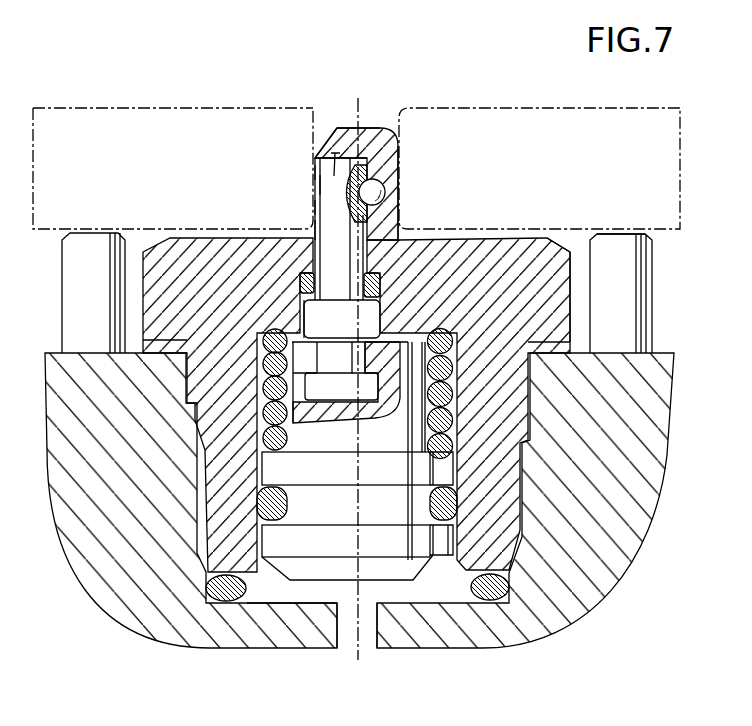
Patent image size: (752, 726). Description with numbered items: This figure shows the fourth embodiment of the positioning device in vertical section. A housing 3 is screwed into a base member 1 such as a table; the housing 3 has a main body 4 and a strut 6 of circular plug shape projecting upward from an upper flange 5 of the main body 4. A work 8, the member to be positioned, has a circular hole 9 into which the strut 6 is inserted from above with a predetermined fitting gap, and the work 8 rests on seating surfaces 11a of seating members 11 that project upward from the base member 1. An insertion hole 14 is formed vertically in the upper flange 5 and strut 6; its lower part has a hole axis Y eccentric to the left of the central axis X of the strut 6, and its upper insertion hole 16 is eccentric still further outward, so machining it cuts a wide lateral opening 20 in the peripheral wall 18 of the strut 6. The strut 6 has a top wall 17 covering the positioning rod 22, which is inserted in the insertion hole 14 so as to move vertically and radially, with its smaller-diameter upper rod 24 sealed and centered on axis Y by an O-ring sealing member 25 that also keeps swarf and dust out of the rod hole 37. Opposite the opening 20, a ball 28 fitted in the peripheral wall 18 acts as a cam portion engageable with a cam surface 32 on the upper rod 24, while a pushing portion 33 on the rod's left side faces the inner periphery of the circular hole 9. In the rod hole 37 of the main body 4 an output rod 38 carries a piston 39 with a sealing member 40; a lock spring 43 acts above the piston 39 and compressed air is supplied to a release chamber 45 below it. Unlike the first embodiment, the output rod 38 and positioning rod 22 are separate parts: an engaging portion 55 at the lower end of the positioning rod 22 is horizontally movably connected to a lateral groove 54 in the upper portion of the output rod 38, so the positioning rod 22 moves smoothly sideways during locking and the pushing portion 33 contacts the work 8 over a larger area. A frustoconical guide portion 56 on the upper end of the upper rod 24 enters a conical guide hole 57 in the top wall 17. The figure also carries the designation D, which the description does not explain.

The base member 1 is at (636, 553).
The housing 3 is at (571, 303).
The main body 4 is at (466, 567).
The upper flange 5 is at (566, 272).
The strut 6 is at (400, 175).
The work 8 is at (135, 110).
The circular hole 9 is at (320, 110).
The seating members 11 is at (653, 287).
The seating surfaces 11a is at (613, 230).
The insertion hole 14 is at (380, 303).
The upper insertion hole 16 is at (315, 227).
The top wall 17 is at (325, 140).
The peripheral wall 18 is at (399, 200).
The opening 20 is at (317, 158).
The positioning rod 22 is at (316, 182).
The upper rod 24 is at (320, 208).
The sealing member 25 is at (313, 282).
The ball 28 is at (388, 190).
The cam surface 32 is at (378, 175).
The pushing portion 33 is at (313, 172).
The rod hole 37 is at (258, 466).
The output rod 38 is at (320, 584).
The piston 39 is at (378, 478).
The sealing member 40 is at (288, 503).
The lock spring 43 is at (292, 442).
The release chamber 45 is at (267, 593).
The lateral groove 54 is at (327, 395).
The engaging portion 55 is at (360, 397).
The frustoconical guide portion 56 is at (334, 178).
The conical guide hole 57 is at (334, 132).
The direction arrow D is at (399, 584).
The central axis X is at (362, 104).
The hole axis Y is at (337, 318).